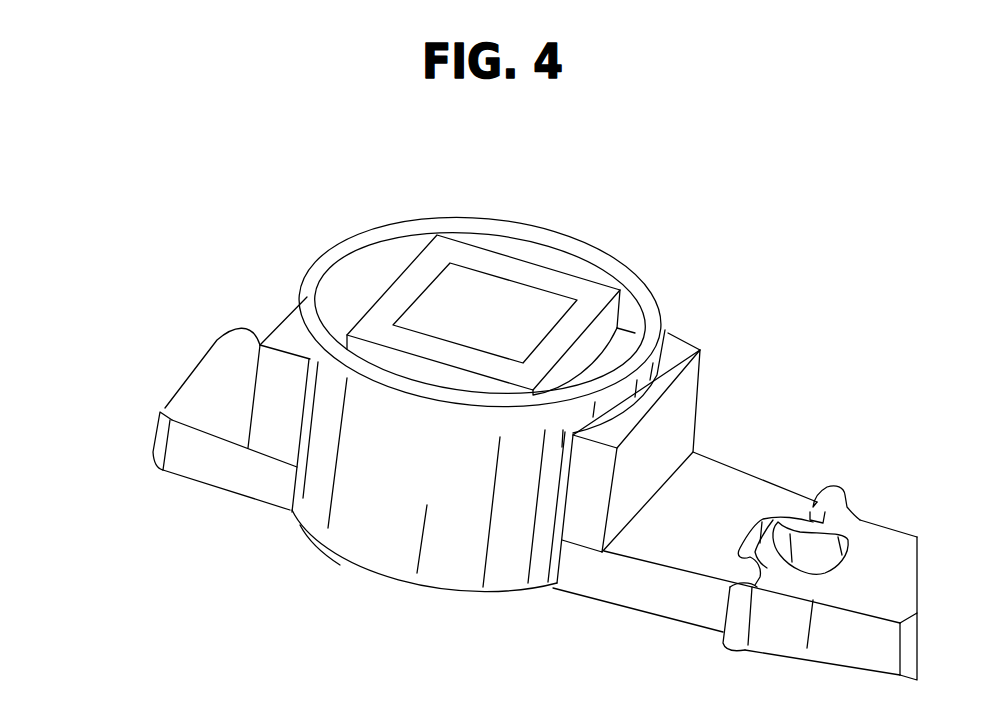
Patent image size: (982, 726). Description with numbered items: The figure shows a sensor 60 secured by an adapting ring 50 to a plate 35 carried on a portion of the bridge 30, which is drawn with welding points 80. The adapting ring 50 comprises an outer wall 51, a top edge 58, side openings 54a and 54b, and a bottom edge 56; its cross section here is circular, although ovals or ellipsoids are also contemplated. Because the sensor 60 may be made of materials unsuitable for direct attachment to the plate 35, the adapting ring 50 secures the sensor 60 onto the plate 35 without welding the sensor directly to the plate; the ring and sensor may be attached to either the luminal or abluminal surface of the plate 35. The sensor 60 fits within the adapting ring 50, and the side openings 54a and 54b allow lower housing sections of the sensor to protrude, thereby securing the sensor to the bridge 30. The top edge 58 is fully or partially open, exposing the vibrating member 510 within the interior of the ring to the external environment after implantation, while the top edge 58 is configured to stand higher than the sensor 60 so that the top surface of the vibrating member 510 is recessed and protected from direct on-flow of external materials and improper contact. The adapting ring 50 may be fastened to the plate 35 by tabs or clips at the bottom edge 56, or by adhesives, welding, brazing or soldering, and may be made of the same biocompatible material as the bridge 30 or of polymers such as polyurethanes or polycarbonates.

The bridge 30 is at (162, 408).
The plate 35 is at (557, 540).
The adapting ring 50 is at (297, 270).
The outer wall 51 is at (449, 490).
The side opening 54a is at (303, 410).
The side opening 54b is at (565, 485).
The bottom edge 56 is at (318, 540).
The top edge 58 is at (608, 258).
The sensor 60 is at (447, 288).
The vibrating member 510 is at (492, 292).
The welding points 80 is at (838, 493).